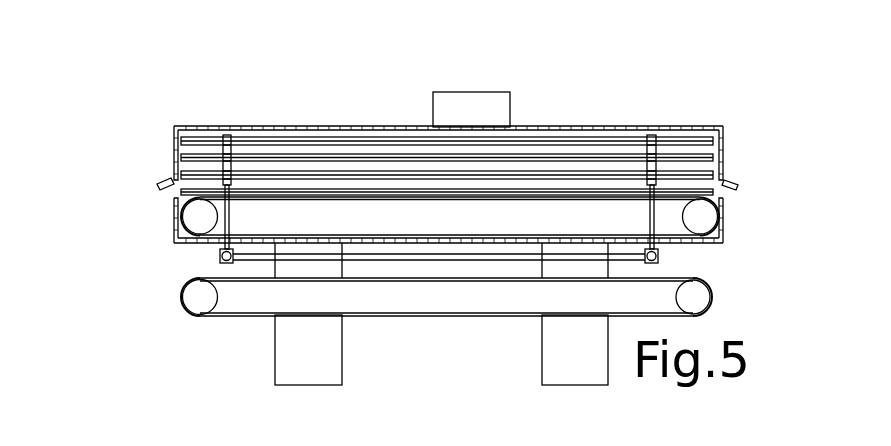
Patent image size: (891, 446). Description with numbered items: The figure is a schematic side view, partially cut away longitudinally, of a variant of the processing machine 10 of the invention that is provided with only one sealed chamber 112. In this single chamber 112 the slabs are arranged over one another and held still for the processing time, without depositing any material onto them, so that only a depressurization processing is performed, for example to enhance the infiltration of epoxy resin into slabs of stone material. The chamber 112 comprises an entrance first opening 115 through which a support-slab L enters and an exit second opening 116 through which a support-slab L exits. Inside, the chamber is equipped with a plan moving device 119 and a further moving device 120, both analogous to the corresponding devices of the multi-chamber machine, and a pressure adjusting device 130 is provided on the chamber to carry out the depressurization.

The laser processing apparatus 10 is at (643, 118).
The chamber 112 is at (381, 146).
The pressure adjusting device 130 is at (467, 100).
The support-slab L is at (529, 168).
The entrance first opening 115 is at (173, 193).
The exit second opening 116 is at (723, 191).
The moving device 120 is at (222, 217).
The plan moving device 119 is at (278, 210).